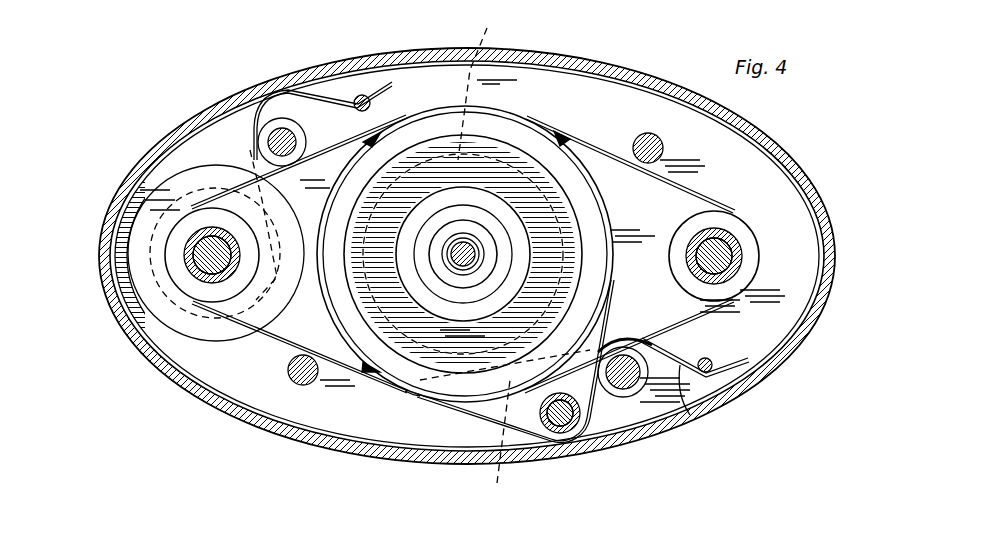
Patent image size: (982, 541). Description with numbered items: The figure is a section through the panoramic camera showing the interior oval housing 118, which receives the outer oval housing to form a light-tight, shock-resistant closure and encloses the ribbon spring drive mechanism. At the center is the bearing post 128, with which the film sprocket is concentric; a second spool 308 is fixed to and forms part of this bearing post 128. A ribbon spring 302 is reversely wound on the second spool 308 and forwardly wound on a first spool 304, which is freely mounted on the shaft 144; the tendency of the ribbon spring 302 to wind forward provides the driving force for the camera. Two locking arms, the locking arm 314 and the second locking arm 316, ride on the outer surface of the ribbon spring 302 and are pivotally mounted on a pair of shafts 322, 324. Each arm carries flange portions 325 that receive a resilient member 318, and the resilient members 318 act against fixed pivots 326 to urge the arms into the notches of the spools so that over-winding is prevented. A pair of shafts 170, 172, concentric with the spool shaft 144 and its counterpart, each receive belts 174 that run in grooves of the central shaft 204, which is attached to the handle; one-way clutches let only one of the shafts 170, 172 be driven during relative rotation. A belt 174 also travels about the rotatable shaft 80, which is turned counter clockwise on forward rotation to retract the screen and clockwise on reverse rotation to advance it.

The interior oval housing 118 is at (795, 350).
The central shaft 204 is at (440, 387).
The bearing post 128 is at (471, 245).
The second spool 308 is at (487, 83).
The shaft 172 is at (183, 228).
The shaft 144 is at (190, 255).
The first spool 304 is at (195, 270).
The locking arm 314 is at (250, 160).
The shaft 170 is at (748, 238).
The belts 174 is at (598, 150).
The ribbon spring 302 is at (232, 340).
The rotatable shaft 80 is at (560, 434).
The second locking arm 316 is at (605, 392).
The shaft 324 is at (682, 415).
The second resilient member 318 is at (268, 133).
The shaft 322 is at (257, 155).
The fixed pivots 326 is at (360, 95).
The flange portions 325 is at (505, 431).